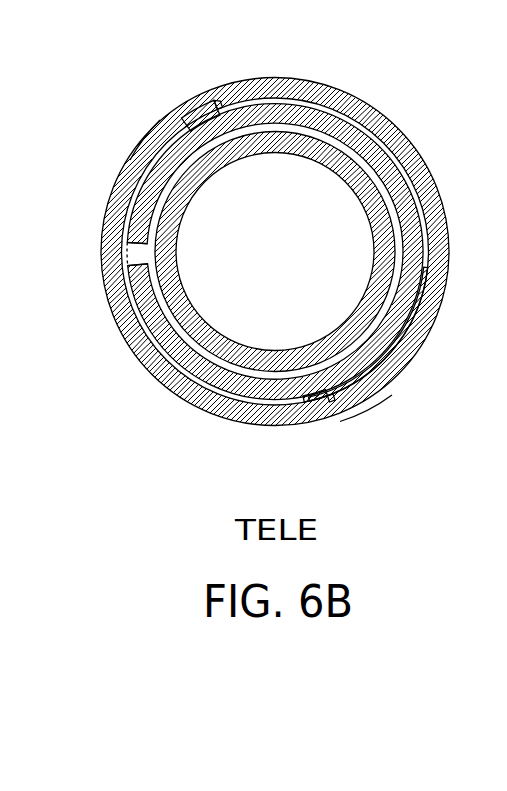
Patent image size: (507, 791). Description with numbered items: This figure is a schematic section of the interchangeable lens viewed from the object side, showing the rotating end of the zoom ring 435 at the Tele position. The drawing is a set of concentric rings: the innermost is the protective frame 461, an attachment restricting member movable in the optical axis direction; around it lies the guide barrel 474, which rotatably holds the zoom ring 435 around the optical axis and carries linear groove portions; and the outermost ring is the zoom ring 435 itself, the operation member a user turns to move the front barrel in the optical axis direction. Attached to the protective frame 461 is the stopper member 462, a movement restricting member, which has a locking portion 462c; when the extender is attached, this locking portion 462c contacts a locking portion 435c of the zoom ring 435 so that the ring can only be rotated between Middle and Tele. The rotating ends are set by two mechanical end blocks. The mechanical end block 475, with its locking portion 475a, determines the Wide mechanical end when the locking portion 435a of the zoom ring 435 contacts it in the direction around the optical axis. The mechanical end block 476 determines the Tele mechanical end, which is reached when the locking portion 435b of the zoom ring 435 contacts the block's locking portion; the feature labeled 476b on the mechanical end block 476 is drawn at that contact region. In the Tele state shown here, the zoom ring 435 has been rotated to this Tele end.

The zoom ring 435 is at (395, 127).
The locking portion 435a is at (433, 268).
The locking portion 435b is at (357, 412).
The locking portion 435c is at (160, 149).
The protective frame 461 is at (222, 154).
The stopper member 462 is at (135, 262).
The locking portion 462c is at (124, 241).
The guide barrel 474 is at (150, 313).
The mechanical end block 475 is at (192, 113).
The locking portion 475a is at (214, 102).
The mechanical end block 476 is at (312, 405).
The protrusion end 476b is at (329, 401).